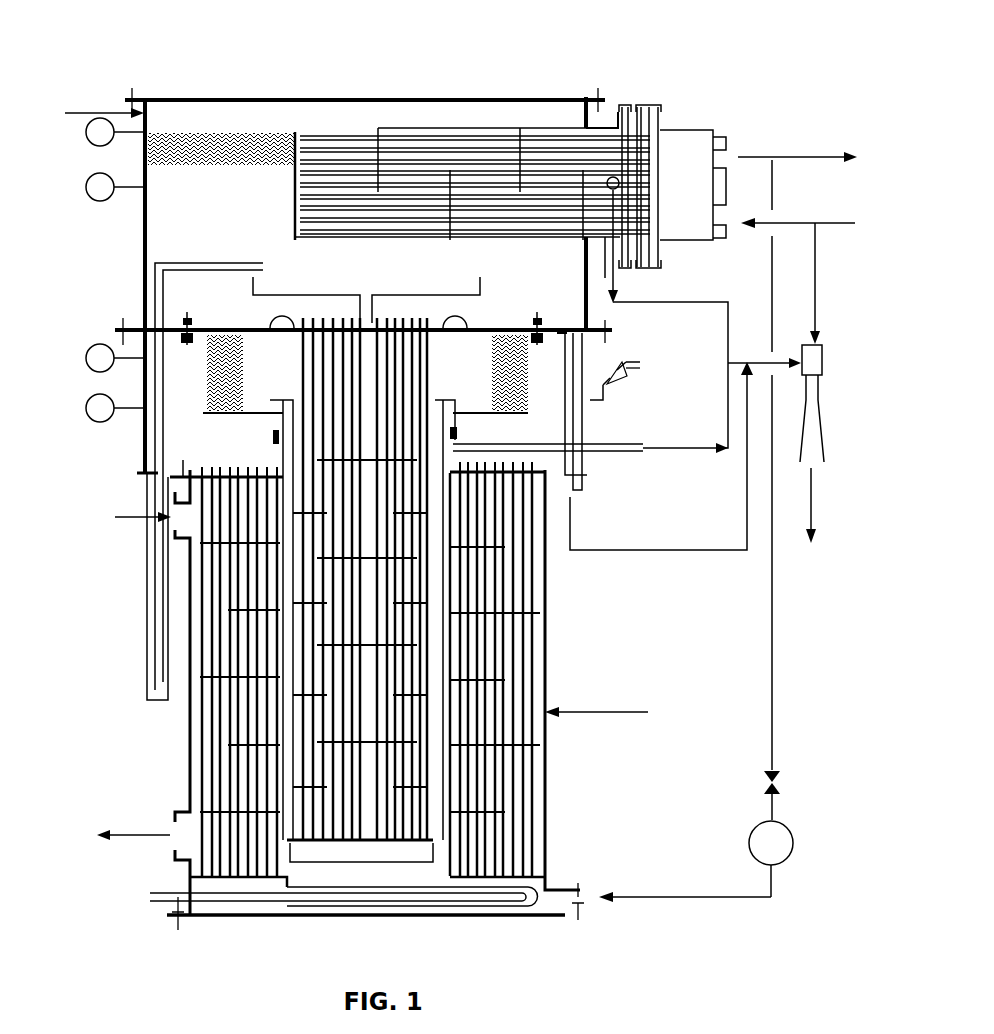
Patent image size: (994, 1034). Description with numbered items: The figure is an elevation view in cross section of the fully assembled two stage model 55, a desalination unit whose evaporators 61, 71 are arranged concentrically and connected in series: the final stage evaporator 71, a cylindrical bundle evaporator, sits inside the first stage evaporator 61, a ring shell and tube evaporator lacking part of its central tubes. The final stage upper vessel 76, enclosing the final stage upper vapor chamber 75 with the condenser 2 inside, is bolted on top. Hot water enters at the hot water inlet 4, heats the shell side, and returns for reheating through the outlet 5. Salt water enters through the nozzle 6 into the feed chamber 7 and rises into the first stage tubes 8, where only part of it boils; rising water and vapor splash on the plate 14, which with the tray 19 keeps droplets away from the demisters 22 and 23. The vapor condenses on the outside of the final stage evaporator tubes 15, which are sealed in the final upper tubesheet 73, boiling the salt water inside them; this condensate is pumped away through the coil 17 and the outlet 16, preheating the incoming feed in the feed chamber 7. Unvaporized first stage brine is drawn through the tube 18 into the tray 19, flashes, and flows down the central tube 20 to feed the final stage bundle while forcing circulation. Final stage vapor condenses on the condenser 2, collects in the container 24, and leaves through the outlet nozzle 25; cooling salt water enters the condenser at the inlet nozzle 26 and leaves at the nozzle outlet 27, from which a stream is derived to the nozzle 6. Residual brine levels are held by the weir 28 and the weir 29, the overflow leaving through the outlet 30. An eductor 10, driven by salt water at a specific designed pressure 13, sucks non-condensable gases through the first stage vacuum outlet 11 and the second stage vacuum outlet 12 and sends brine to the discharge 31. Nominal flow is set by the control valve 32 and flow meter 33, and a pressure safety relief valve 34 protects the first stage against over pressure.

The condenser 2 is at (413, 150).
The hot water inlet 4 is at (132, 512).
The outlet 5 is at (123, 834).
The nozzle 6 is at (685, 885).
The feed chamber 7 is at (258, 891).
The first stage tubes 8 is at (505, 652).
The eductor 10 is at (825, 357).
The first stage vacuum outlet 11 is at (680, 452).
The second stage vacuum outlet 12 is at (678, 300).
The salt water at a specific designed pressure 13 is at (827, 283).
The plate 14 is at (472, 413).
The final stage evaporator tubes 15 is at (410, 370).
The outlet 16 is at (157, 900).
The coil 17 is at (428, 906).
The tube 18 is at (163, 307).
The tray 19 is at (300, 294).
The central tube 20 is at (372, 294).
The demister 22 is at (238, 388).
The demister 23 is at (248, 163).
The container 24 is at (292, 204).
The outlet nozzle 25 is at (601, 258).
The inlet nozzle 26 is at (815, 222).
The nozzle outlet 27 is at (813, 157).
The weir 28 is at (186, 461).
The weir 29 is at (552, 327).
The outlet 30 is at (661, 456).
The discharge 31 is at (811, 523).
The control valve 32 is at (780, 781).
The flow meter 33 is at (771, 859).
The pressure safety relief valve 34 is at (620, 383).
The two stage model 55 is at (703, 81).
The first stage evaporator 61 is at (612, 712).
The final stage evaporator 71 is at (333, 864).
The final upper tubesheet 73 is at (247, 328).
The final stage upper vapor chamber 75 is at (197, 237).
The final stage upper vessel 76 is at (85, 113).